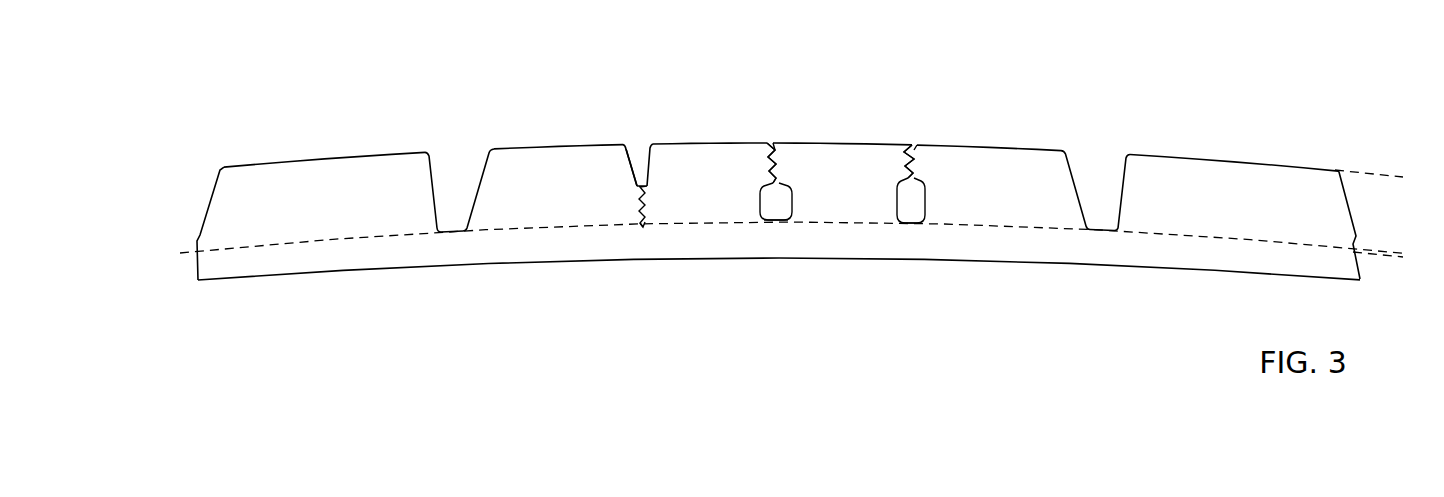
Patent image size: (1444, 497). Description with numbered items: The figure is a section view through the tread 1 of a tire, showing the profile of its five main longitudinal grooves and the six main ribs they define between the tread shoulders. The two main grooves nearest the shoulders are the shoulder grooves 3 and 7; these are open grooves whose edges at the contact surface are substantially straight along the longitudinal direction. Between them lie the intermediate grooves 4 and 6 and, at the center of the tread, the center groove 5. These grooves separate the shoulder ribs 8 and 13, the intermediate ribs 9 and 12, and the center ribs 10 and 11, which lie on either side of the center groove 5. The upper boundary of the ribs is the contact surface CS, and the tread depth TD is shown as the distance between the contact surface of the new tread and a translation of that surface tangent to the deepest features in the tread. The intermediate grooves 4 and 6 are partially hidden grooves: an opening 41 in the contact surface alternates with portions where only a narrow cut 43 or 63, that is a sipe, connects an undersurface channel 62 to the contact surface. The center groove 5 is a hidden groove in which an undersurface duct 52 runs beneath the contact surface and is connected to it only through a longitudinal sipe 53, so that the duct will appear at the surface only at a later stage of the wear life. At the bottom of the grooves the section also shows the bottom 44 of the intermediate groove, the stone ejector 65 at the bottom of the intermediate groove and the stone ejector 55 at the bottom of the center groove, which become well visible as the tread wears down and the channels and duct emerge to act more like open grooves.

The tire tread 1 is at (201, 131).
The shoulder groove 3 is at (450, 138).
The intermediate groove 4 is at (648, 116).
The center groove 5 is at (782, 115).
The intermediate groove 6 is at (917, 118).
The shoulder groove 7 is at (1108, 146).
The shoulder rib 8 is at (278, 177).
The intermediate rib 9 is at (547, 173).
The center rib 10 is at (725, 173).
The center rib 11 is at (842, 167).
The intermediate rib 12 is at (1000, 175).
The shoulder rib 13 is at (1220, 173).
The contact surface CS is at (342, 150).
The tread depth TD is at (1378, 173).
The opening 41 is at (637, 152).
The narrow cut 43 is at (640, 200).
The groove bottom 44 is at (643, 226).
The undersurface duct 52 is at (777, 197).
The longitudinal sipe 53 is at (770, 160).
The stone ejector 55 is at (777, 219).
The undersurface channel 62 is at (917, 195).
The narrow cut 63 is at (912, 160).
The stone ejector 65 is at (908, 222).